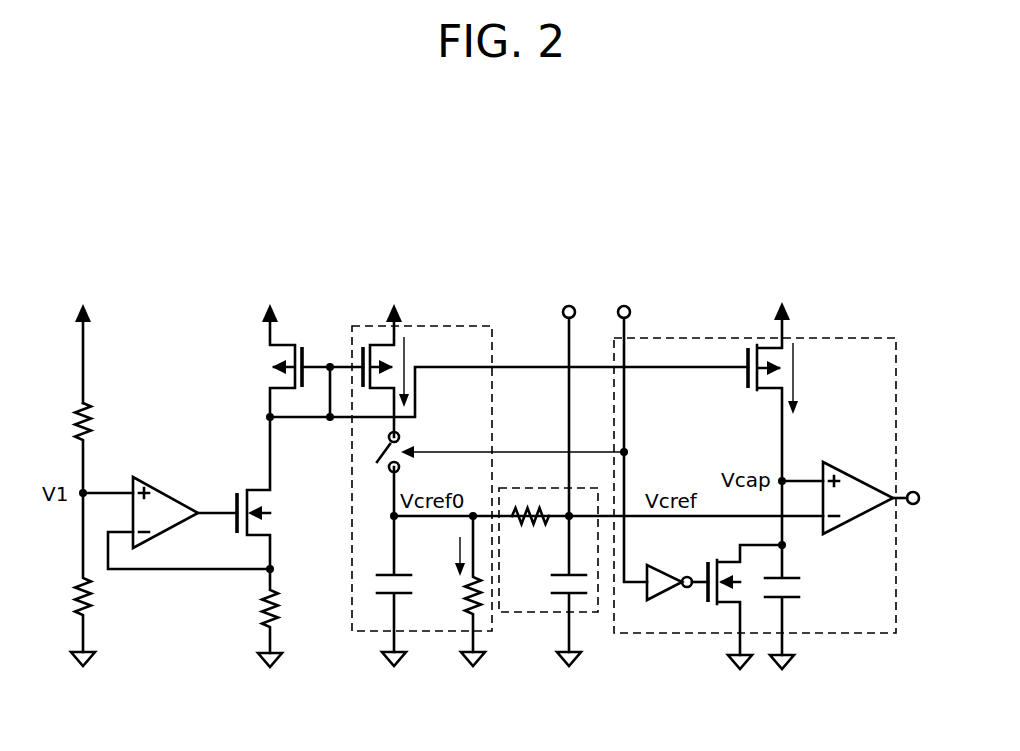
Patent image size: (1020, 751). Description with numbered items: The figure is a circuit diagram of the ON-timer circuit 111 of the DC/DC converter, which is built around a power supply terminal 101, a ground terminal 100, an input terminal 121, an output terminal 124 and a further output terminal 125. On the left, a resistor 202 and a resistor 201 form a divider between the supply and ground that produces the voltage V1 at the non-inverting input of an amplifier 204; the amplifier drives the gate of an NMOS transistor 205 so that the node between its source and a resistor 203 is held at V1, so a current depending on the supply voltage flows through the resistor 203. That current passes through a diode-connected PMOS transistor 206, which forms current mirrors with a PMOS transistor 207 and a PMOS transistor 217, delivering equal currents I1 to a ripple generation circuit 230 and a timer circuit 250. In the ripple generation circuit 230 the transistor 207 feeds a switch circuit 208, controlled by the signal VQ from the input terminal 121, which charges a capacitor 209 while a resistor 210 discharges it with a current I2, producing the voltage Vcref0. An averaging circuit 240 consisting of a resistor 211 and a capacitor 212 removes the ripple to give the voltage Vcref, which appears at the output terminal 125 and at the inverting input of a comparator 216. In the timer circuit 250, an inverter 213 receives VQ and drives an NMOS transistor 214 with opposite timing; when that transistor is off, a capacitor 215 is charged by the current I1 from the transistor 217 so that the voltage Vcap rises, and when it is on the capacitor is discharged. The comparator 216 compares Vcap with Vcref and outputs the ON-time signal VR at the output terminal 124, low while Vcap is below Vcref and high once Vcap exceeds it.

The ground terminal 100 is at (82, 668).
The power supply terminal 101 is at (87, 312).
The ON-timer circuit 111 is at (568, 238).
The input terminal 121 is at (627, 430).
The output terminal 124 is at (917, 490).
The output terminal 125 is at (574, 397).
The resistor 201 is at (95, 595).
The resistor 202 is at (95, 413).
The resistor 203 is at (258, 612).
The amplifier 204 is at (166, 490).
The NMOS transistor 205 is at (252, 488).
The PMOS transistor 206 is at (294, 342).
The PMOS transistor 207 is at (376, 342).
The switch circuit 208 is at (377, 455).
The capacitor 209 is at (375, 573).
The resistor 210 is at (453, 594).
The resistor 211 is at (528, 503).
The capacitor 212 is at (557, 593).
The inverter 213 is at (645, 590).
The NMOS transistor 214 is at (713, 600).
The capacitor 215 is at (798, 587).
The comparator 216 is at (857, 472).
The PMOS transistor 217 is at (763, 390).
The ripple generation circuit 230 is at (367, 628).
The averaging circuit 240 is at (587, 614).
The timer circuit 250 is at (889, 338).